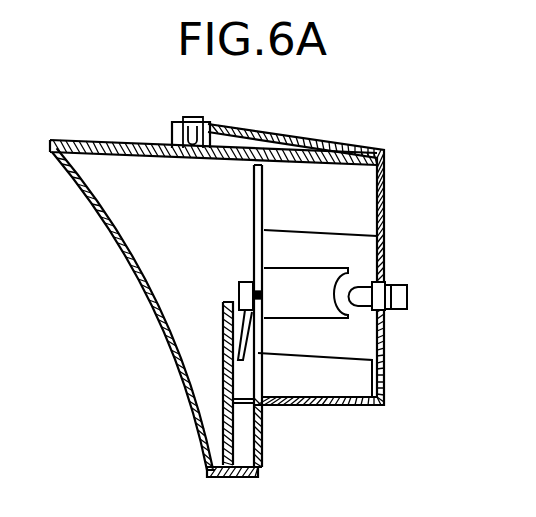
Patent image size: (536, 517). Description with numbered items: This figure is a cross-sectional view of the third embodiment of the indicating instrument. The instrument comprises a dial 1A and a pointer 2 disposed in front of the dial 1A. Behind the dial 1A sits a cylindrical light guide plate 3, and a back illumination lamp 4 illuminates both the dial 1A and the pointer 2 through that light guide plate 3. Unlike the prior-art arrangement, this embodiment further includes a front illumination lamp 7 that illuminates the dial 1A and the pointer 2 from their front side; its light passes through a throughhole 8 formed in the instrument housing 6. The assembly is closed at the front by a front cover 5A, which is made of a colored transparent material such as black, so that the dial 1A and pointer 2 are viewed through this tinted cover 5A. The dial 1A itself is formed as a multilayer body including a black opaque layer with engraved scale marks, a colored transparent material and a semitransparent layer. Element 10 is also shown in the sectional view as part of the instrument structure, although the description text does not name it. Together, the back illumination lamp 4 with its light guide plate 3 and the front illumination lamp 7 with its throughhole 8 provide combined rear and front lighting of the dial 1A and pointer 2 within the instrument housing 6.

The dial 1A is at (253, 375).
The pointer 2 is at (240, 331).
The light guide plate 3 is at (320, 285).
The back illumination lamp 4 is at (357, 290).
The front cover 5A is at (103, 224).
The instrument housing 6 is at (157, 157).
The front illumination lamp 7 is at (176, 134).
The throughhole 8 is at (200, 159).
The support plate 10 is at (222, 427).